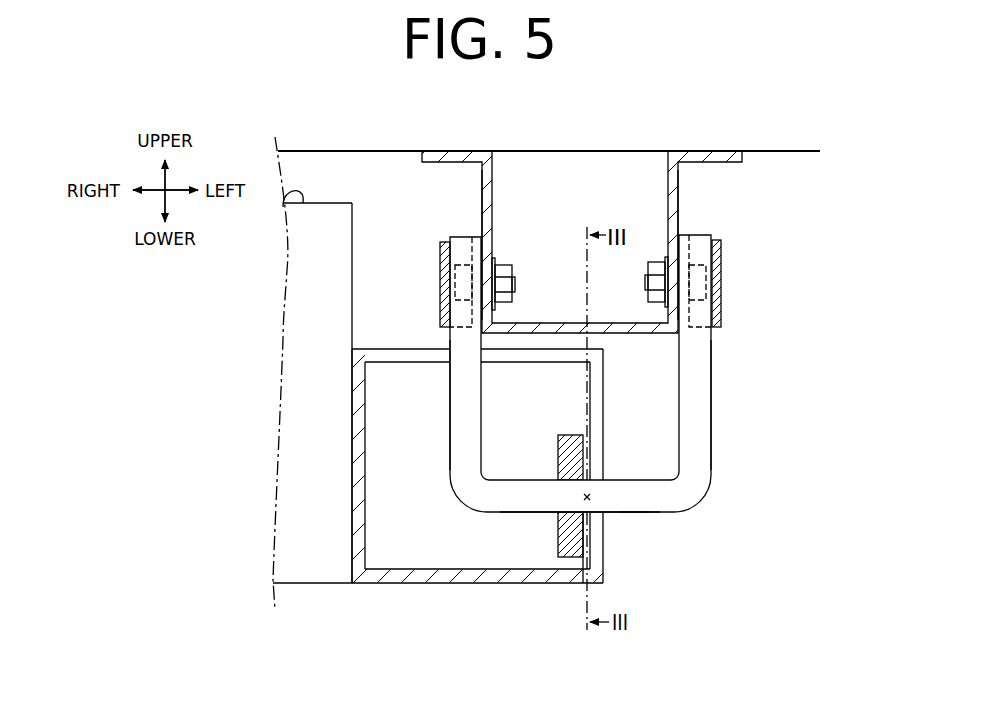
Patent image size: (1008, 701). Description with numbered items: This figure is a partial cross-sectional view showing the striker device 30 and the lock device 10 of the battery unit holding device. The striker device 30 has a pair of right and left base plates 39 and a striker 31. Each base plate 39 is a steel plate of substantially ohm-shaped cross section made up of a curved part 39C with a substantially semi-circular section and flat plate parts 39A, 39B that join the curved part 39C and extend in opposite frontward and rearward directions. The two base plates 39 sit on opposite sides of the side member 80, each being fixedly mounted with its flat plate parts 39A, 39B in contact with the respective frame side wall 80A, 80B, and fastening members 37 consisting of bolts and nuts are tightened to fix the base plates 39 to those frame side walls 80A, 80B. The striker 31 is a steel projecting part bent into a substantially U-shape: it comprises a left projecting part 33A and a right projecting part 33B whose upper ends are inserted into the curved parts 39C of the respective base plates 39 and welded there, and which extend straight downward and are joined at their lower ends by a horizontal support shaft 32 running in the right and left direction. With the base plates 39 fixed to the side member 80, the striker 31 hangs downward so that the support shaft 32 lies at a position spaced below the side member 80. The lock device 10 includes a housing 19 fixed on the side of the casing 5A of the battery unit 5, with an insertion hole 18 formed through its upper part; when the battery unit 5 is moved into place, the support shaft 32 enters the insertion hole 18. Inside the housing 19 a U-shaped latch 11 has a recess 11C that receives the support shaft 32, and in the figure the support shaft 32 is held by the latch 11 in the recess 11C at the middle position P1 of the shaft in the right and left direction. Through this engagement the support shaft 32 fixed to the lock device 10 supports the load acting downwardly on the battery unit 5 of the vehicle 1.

The vehicle 1 is at (707, 519).
The battery unit 5 is at (310, 481).
The casing 5A is at (283, 196).
The lock device 10 is at (507, 500).
The latch 11 is at (549, 548).
The recess 11C is at (558, 487).
The insertion hole 18 is at (603, 388).
The housing 19 is at (500, 584).
The striker device 30 is at (597, 399).
The striker 31 is at (594, 399).
The support shaft 32 is at (645, 500).
The left projecting part 33A is at (697, 408).
The right projecting part 33B is at (467, 418).
The fastening members 37 is at (512, 262).
The base plate 39 is at (605, 245).
The flat plate part 39A is at (580, 281).
The flat plate part 39B is at (631, 245).
The curved part 39C is at (446, 302).
The side member 80 is at (582, 223).
The frame side wall 80A is at (667, 190).
The frame side wall 80B is at (494, 193).
The middle position P1 is at (590, 495).